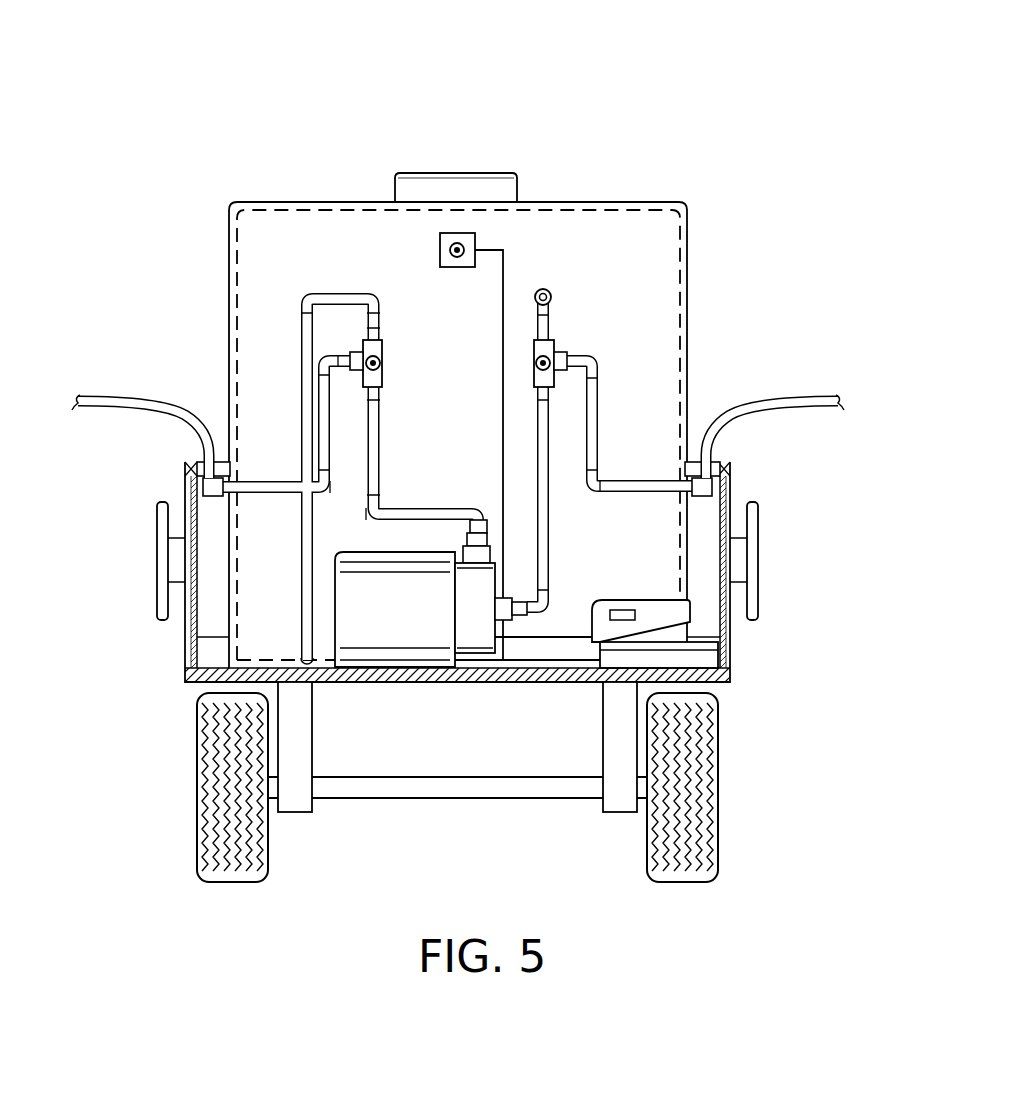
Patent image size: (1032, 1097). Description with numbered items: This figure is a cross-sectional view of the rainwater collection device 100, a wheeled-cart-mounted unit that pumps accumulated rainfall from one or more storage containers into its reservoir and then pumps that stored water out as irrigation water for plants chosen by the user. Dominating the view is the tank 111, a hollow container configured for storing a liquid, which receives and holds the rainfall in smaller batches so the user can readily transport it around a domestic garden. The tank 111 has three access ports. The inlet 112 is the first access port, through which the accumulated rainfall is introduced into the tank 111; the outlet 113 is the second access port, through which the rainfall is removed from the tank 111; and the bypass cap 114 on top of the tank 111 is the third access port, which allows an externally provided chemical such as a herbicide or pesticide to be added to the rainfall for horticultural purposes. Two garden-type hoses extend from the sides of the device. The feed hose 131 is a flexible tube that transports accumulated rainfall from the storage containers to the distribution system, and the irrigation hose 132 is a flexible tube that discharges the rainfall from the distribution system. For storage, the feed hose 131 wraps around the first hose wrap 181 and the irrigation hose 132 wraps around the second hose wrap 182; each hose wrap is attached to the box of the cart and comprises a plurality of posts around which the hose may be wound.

The rainwater collection device 100 is at (138, 156).
The tank 111 is at (687, 257).
The bypass cap 114 is at (484, 178).
The feed hose 131 is at (128, 397).
The irrigation hose 132 is at (793, 395).
The inlet 112 is at (195, 487).
The outlet 113 is at (722, 490).
The first hose wrap 181 is at (157, 545).
The second hose wrap 182 is at (758, 552).